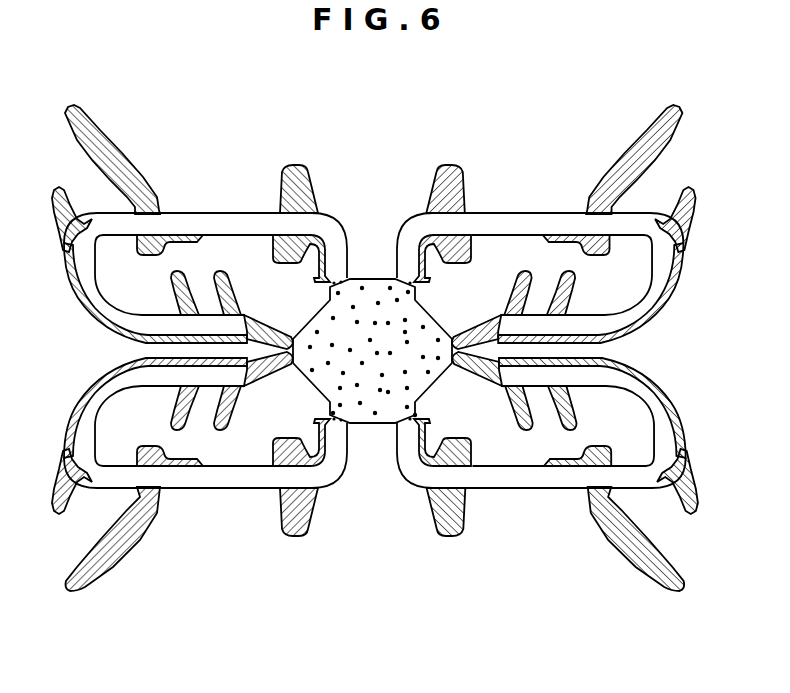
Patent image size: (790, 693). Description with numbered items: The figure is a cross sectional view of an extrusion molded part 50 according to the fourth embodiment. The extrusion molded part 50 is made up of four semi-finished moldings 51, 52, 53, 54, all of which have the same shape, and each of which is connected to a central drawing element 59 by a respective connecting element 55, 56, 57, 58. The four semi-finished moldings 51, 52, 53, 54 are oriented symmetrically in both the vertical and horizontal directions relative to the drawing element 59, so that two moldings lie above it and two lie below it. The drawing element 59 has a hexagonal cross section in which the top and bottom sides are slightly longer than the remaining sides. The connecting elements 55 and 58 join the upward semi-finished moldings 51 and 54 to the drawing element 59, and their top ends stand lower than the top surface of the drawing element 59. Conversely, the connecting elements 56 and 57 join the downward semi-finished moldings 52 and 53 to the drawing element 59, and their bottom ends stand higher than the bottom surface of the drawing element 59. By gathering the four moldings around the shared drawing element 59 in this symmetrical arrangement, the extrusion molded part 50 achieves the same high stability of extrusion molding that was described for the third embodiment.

The extrusion molded part 50 is at (377, 166).
The semi-finished molding 51 is at (200, 227).
The semi-finished molding 52 is at (200, 474).
The semi-finished molding 53 is at (544, 474).
The semi-finished molding 54 is at (544, 227).
The connecting element 55 is at (332, 294).
The connecting element 56 is at (334, 407).
The connecting element 57 is at (413, 407).
The connecting element 58 is at (412, 294).
The drawing element 59 is at (371, 296).